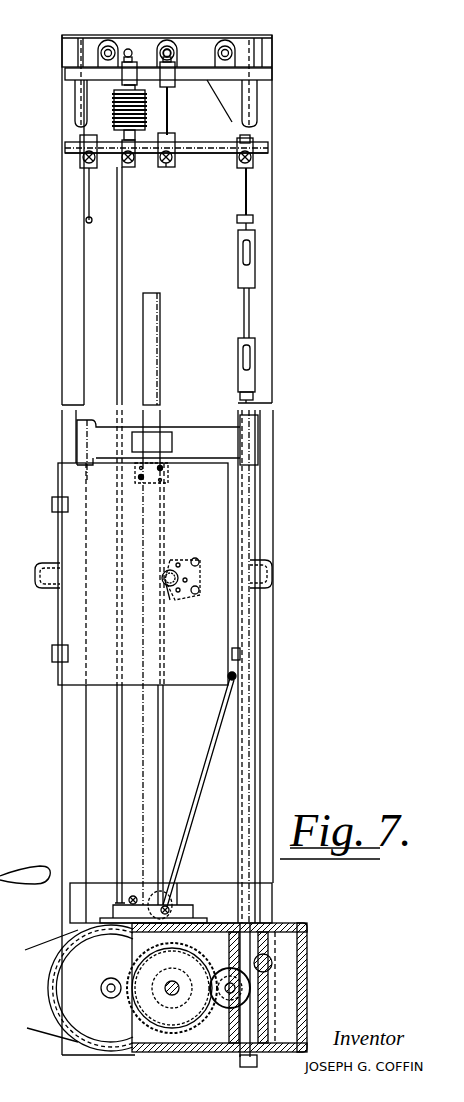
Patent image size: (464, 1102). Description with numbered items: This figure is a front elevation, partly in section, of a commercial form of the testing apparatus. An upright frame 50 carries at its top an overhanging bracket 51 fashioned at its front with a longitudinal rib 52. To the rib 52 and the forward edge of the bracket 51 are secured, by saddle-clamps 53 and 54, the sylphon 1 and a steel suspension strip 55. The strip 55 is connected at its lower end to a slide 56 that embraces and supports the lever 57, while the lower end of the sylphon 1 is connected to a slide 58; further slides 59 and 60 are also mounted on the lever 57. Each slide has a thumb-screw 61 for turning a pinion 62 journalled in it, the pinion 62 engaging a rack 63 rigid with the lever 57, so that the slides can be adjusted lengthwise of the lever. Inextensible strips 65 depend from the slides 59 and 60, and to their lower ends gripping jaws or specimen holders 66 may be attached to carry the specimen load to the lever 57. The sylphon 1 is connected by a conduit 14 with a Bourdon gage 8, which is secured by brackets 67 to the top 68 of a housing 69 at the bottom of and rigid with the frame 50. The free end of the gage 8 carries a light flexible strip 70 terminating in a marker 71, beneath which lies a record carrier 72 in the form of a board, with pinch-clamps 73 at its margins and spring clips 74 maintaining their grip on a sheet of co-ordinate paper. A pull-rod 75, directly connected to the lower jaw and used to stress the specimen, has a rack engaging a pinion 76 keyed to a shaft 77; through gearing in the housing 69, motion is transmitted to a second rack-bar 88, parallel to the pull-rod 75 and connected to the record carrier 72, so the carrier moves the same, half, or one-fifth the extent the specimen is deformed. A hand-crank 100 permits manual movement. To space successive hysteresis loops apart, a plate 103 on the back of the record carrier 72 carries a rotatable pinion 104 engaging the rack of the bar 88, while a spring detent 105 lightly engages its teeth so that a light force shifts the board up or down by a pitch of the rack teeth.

The sylphon 1 is at (110, 95).
The Bourdon gage 8 is at (168, 905).
The conduit 14 is at (120, 265).
The upright frame 50 is at (70, 716).
The overhanging bracket 51 is at (260, 40).
The longitudinal rib 52 is at (72, 66).
The saddle-clamp 53 is at (126, 48).
The saddle-clamp 54 is at (175, 60).
The steel suspension strip 55 is at (167, 107).
The slide 56 is at (175, 140).
The lever 57 is at (213, 150).
The slide 58 is at (132, 168).
The slide 59 is at (82, 165).
The slide 60 is at (250, 138).
The thumb-screw 61 is at (255, 157).
The pinion 62 is at (168, 168).
The rack 63 is at (68, 158).
The inextensible strip 65 is at (85, 195).
The gripping jaw 66 is at (255, 240).
The bracket 67 is at (133, 896).
The housing top 68 is at (300, 925).
The housing 69 is at (305, 972).
The flexible strip 70 is at (202, 748).
The marker 71 is at (240, 672).
The record carrier 72 is at (215, 630).
The pinch-clamp 73 is at (262, 562).
The spring clip 74 is at (52, 500).
The pull-rod 75 is at (258, 740).
The pinion 76 is at (233, 990).
The shaft 77 is at (218, 1000).
The rack-bar 88 is at (155, 718).
The hand-crank 100 is at (66, 958).
The plate 103 is at (178, 560).
The pinion 104 is at (176, 592).
The spring detent 105 is at (190, 583).